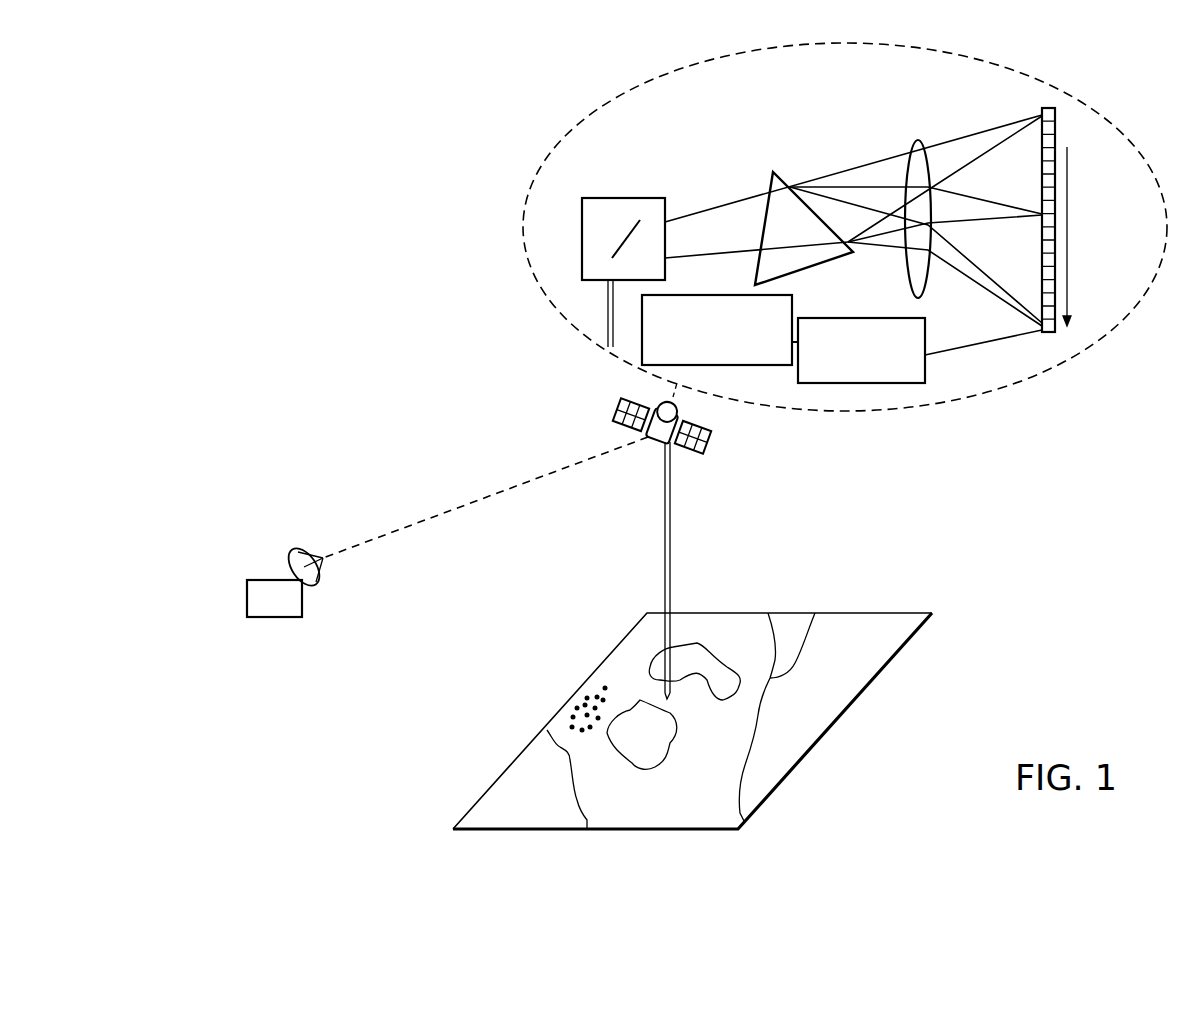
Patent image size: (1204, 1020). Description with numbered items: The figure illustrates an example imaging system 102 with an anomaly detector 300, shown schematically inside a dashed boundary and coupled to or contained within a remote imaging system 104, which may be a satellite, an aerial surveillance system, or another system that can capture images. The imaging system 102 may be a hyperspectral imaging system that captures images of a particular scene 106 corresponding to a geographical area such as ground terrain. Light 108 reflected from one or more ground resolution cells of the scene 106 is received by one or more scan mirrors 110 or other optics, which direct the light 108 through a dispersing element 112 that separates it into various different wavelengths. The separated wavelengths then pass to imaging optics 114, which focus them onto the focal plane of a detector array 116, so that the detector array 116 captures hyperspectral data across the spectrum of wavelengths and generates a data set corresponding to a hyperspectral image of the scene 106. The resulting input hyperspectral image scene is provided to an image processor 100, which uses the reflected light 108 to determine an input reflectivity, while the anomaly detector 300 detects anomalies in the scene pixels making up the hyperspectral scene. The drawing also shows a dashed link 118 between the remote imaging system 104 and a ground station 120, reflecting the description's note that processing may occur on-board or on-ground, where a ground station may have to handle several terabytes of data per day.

The image processor 100 is at (908, 383).
The imaging system 102 is at (997, 390).
The remote imaging system 104 is at (712, 448).
The scene 106 is at (557, 718).
The light 108 is at (603, 312).
The scan mirrors 110 is at (625, 198).
The dispersing element 112 is at (780, 179).
The imaging optics 114 is at (914, 140).
The detector array 116 is at (1045, 108).
The communication link 118 is at (477, 500).
The ground station 120 is at (262, 580).
The anomaly detector 300 is at (727, 342).